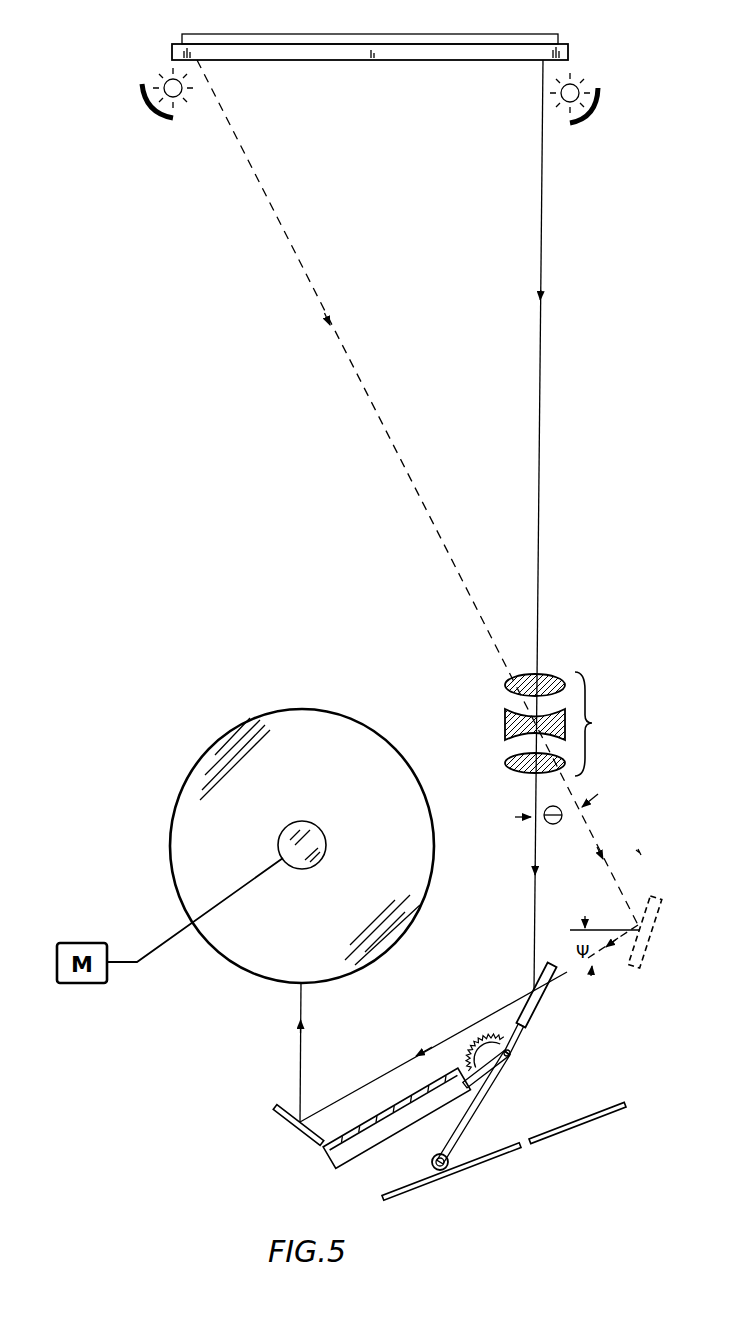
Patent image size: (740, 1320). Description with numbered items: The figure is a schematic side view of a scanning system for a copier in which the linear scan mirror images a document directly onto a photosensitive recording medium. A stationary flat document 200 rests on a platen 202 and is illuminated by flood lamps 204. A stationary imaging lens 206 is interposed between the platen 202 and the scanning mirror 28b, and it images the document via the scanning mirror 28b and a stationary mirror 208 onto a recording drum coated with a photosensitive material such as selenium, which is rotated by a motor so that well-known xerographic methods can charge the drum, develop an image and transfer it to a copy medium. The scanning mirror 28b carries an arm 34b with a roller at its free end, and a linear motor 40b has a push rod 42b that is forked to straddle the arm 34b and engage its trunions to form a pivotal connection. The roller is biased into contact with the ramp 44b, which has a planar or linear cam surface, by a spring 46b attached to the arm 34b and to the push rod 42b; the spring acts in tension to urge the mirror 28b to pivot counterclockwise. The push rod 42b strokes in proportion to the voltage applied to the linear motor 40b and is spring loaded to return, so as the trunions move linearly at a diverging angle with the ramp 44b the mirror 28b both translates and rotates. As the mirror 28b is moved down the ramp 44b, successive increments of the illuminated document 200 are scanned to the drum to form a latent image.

The flat document 200 is at (548, 34).
The platen 202 is at (568, 54).
The flood lamps 204 is at (148, 86).
The stationary imaging lens 206 is at (567, 724).
The scanning mirror 28b is at (640, 946).
The spring 46b is at (494, 1035).
The push rod 42b is at (480, 1080).
The arm 34b is at (467, 1128).
The ramp 44b is at (577, 1120).
The linear motor 40b is at (330, 1164).
The stationary mirror 208 is at (275, 1115).